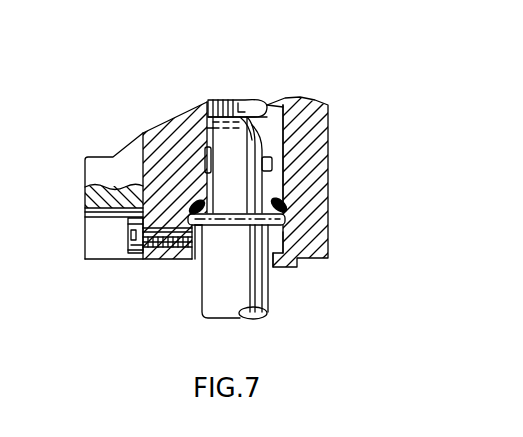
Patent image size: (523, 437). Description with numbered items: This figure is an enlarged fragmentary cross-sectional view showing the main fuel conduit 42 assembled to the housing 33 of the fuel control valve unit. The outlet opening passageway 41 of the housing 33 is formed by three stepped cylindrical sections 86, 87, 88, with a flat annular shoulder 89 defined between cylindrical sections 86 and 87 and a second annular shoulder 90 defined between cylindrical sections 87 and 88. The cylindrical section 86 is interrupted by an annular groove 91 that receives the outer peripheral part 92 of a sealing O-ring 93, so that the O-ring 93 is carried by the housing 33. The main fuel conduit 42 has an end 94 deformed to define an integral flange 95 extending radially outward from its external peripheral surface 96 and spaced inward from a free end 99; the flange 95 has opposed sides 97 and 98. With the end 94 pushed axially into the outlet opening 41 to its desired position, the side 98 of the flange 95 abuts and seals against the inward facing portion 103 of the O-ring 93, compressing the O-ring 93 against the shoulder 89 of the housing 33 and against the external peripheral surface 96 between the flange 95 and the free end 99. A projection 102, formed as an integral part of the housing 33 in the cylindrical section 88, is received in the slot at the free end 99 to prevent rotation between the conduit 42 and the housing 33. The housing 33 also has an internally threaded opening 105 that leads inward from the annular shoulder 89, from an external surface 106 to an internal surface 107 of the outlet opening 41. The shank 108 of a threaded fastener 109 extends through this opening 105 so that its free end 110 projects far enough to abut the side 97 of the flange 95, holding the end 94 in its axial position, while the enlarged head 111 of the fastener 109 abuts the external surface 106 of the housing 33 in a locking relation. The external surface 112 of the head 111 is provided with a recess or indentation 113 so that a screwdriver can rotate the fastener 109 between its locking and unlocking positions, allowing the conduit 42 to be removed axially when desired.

The housing 33 is at (322, 120).
The outlet opening passageway 41 is at (322, 156).
The main fuel conduit 42 is at (267, 318).
The cylindrical section 86 is at (277, 268).
The cylindrical section 87 is at (205, 140).
The cylindrical section 88 is at (253, 100).
The annular shoulder 89 is at (290, 197).
The annular shoulder 90 is at (287, 99).
The annular groove 91 is at (180, 207).
The outer peripheral part 92 is at (175, 128).
The sealing O-ring 93 is at (293, 209).
The end 94 is at (222, 312).
The integral flange 95 is at (285, 240).
The external peripheral surface 96 is at (288, 251).
The side 97 is at (233, 230).
The side 98 is at (230, 165).
The free end 99 is at (247, 97).
The projection 102 is at (227, 92).
The inward facing portion 103 is at (231, 153).
The internally threaded opening 105 is at (150, 260).
The external surface 106 is at (128, 220).
The internal surface 107 is at (192, 262).
The shank 108 is at (167, 260).
The threaded fastener 109 is at (120, 259).
The free end 110 is at (212, 236).
The enlarged head 111 is at (128, 228).
The external surface 112 is at (128, 236).
The recess or indentation 113 is at (128, 244).